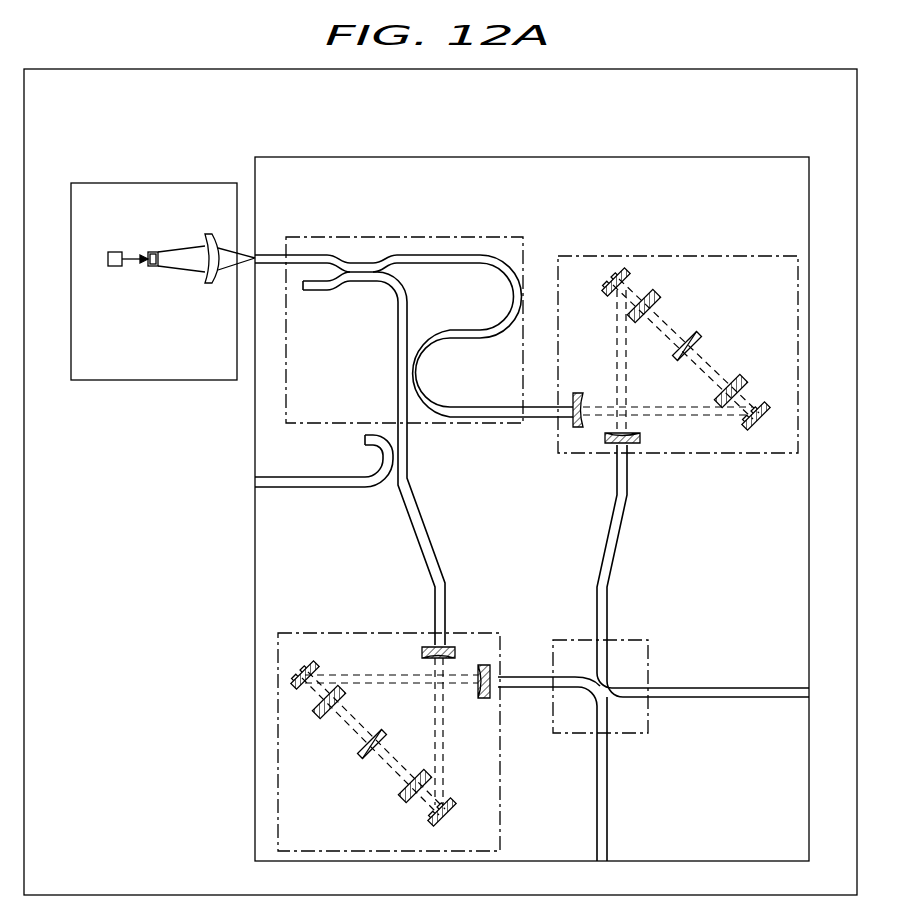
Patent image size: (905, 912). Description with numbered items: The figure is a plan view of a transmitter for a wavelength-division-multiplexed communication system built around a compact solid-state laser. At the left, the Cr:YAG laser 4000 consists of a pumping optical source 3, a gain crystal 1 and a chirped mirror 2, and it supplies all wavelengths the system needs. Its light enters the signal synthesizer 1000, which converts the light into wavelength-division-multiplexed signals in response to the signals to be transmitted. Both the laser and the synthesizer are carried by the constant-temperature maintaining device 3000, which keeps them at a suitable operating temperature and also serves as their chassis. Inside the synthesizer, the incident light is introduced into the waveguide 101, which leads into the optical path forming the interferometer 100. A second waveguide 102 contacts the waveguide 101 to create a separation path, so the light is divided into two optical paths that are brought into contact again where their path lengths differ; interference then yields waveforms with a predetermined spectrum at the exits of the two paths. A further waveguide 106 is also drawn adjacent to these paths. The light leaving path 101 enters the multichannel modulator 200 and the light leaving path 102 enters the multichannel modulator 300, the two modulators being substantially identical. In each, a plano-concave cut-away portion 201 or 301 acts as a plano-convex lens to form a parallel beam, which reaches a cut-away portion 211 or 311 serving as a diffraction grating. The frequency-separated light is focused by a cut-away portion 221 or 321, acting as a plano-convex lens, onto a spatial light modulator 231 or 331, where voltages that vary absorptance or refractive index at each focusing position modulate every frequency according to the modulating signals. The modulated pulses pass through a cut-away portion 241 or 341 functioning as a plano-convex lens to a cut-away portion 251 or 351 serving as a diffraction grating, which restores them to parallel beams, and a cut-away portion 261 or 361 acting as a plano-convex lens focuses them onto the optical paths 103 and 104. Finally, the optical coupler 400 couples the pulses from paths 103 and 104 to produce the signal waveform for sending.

The constant-temperature maintaining device 3000 is at (762, 68).
The signal synthesizer 1000 is at (632, 157).
The Cr:YAG laser 4000 is at (205, 183).
The gain crystal 1 is at (152, 267).
The chirped mirror 2 is at (207, 285).
The pumping optical source 3 is at (110, 268).
The interferometer 100 is at (418, 237).
The waveguide 101 is at (270, 254).
The waveguide 102 is at (313, 291).
The coupling optical waveguide 106 is at (318, 488).
The optical path 103 is at (617, 530).
The optical path 104 is at (520, 676).
The multichannel modulator 200 is at (738, 256).
The cut-away portion 201 is at (580, 393).
The cut-away portion 211 is at (758, 421).
The cut-away portion 221 is at (745, 383).
The spatial light modulator 231 is at (692, 333).
The cut-away portion 241 is at (650, 297).
The cut-away portion 251 is at (604, 283).
The cut-away portion 261 is at (641, 438).
The multichannel modulator 300 is at (332, 633).
The cut-away portion 301 is at (425, 650).
The cut-away portion 311 is at (432, 818).
The cut-away portion 321 is at (405, 796).
The spatial light modulator 331 is at (365, 749).
The cut-away portion 341 is at (322, 710).
The cut-away portion 351 is at (310, 666).
The cut-away portion 361 is at (484, 699).
The optical coupler 400 is at (634, 640).